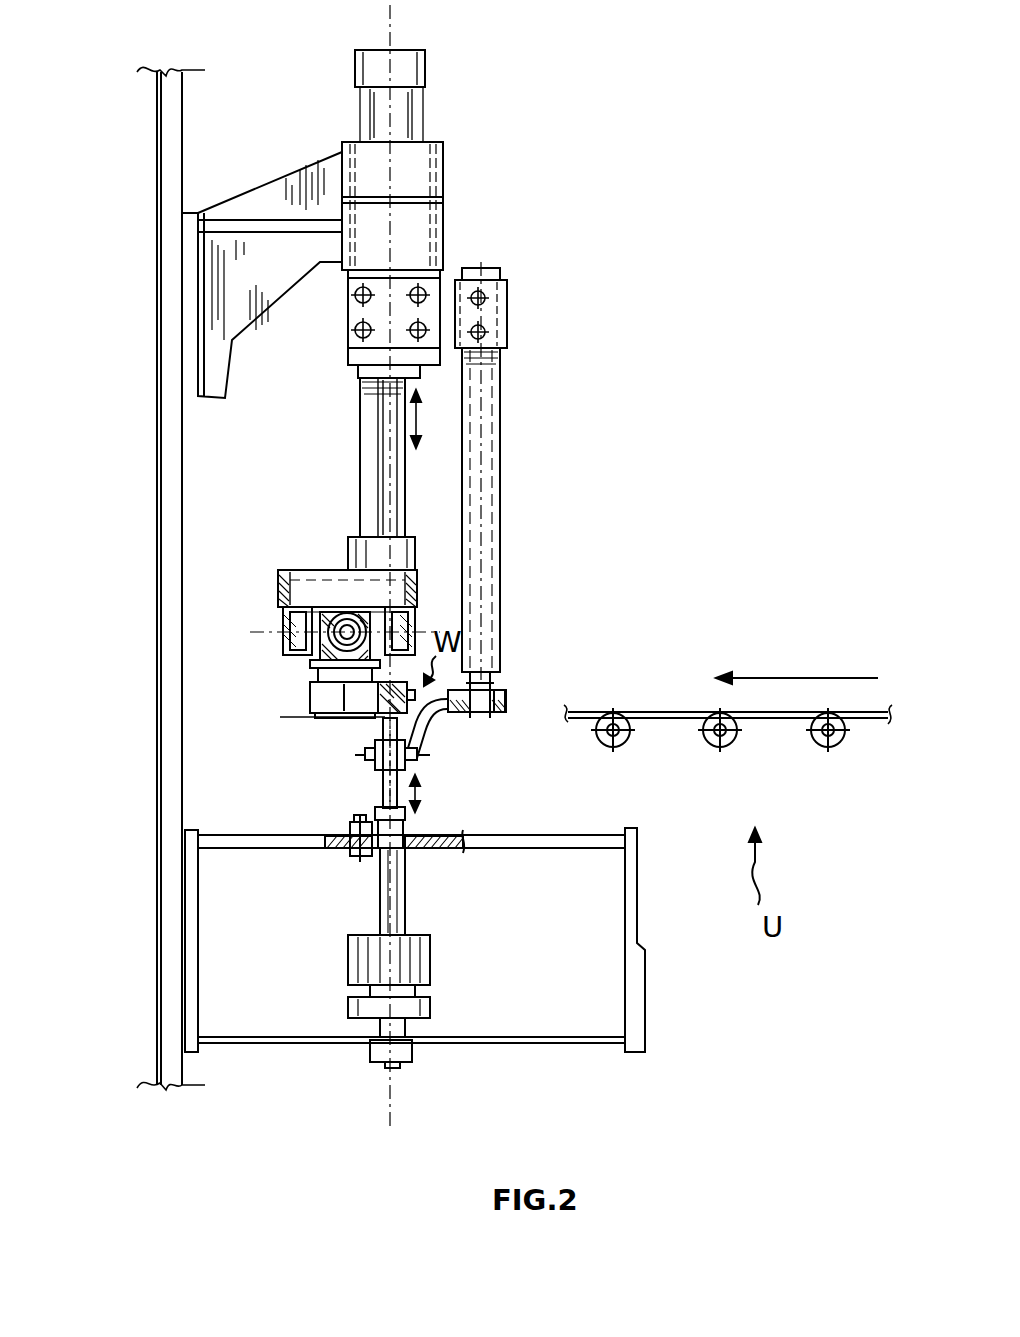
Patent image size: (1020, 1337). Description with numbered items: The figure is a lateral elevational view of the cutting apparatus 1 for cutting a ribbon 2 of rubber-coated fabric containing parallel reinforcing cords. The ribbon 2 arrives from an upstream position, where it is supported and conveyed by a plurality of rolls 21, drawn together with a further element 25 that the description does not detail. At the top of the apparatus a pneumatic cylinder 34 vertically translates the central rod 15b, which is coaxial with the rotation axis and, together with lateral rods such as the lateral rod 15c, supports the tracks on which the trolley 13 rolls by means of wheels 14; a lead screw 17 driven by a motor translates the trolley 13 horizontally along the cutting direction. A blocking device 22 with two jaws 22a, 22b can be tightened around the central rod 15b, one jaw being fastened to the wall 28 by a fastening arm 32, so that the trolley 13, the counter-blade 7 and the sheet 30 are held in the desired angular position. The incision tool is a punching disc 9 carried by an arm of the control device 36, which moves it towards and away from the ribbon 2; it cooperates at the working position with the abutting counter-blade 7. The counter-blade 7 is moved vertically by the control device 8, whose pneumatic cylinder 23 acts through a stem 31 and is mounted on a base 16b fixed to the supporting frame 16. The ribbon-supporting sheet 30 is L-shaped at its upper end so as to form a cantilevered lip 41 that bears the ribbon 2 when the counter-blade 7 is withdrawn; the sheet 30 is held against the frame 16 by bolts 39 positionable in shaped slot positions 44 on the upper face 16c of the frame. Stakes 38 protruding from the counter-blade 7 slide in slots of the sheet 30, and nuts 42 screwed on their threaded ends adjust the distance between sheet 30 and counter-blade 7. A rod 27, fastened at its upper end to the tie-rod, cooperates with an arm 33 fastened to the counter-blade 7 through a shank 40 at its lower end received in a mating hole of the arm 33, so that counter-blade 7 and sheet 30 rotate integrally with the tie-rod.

The cutting apparatus 1 is at (245, 669).
The ribbon of rubber-coated fabric 2 is at (652, 711).
The abutting counter-blade 7 is at (380, 788).
The control device 8 is at (440, 927).
The punching disc 9 is at (420, 718).
The trolley 13 is at (277, 595).
The wheels 14 is at (270, 630).
The central rod 15b is at (396, 427).
The lateral rod 15c is at (368, 470).
The supporting frame 16 is at (645, 968).
The base 16b is at (432, 1010).
The upper face 16c is at (522, 835).
The lead screw 17 is at (340, 610).
The rolls 21 is at (722, 748).
The blocking device 22 is at (407, 235).
The jaw 22a is at (413, 245).
The jaw 22b is at (360, 160).
The pneumatic cylinder 23 is at (382, 915).
The roller 25 is at (845, 746).
The rod 27 is at (485, 415).
The wall 28 is at (165, 168).
The sheet 30 is at (352, 828).
The stem 31 is at (408, 768).
The fastening arm 32 is at (225, 312).
The arm 33 is at (505, 708).
The pneumatic cylinder 34 is at (427, 67).
The control device 36 is at (310, 703).
The stakes 38 is at (372, 768).
The bolts 39 is at (345, 838).
The shank 40 is at (495, 685).
The lip 41 is at (383, 726).
The nuts 42 is at (365, 751).
The slot position 44 is at (355, 855).